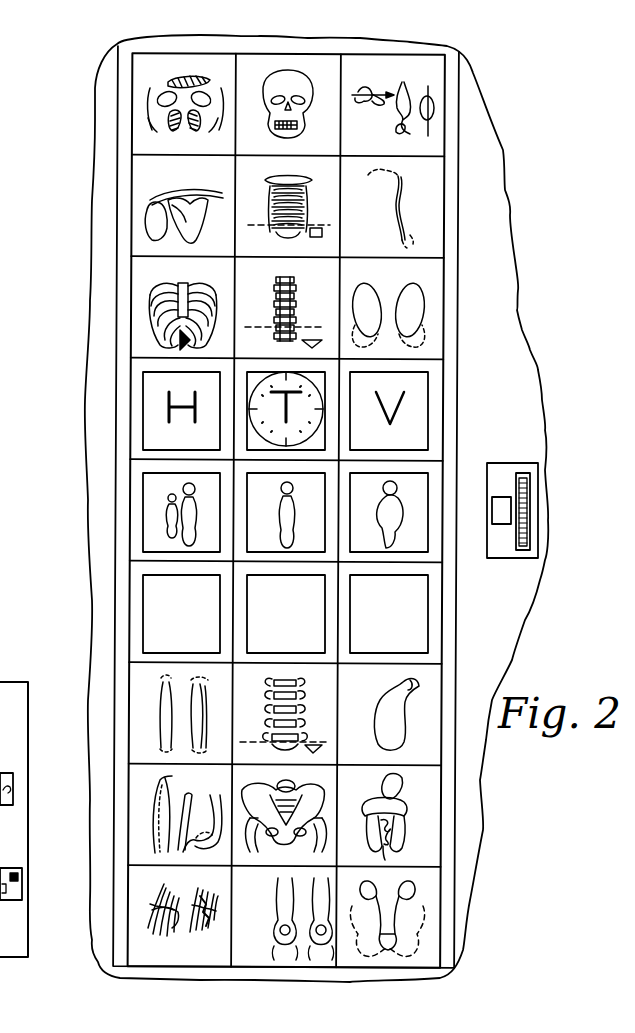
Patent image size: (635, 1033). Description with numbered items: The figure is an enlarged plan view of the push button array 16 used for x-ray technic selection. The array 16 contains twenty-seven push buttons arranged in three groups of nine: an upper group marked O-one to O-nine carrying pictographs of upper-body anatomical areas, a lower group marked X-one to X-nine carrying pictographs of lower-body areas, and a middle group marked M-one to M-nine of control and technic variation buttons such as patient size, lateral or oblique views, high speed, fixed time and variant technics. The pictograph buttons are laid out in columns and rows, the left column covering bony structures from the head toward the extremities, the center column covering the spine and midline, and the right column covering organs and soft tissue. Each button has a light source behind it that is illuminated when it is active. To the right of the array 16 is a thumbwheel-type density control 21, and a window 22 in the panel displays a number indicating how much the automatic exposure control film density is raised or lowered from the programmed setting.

The push button array 16 is at (99, 560).
The slide control 21 is at (528, 492).
The window 22 is at (497, 497).